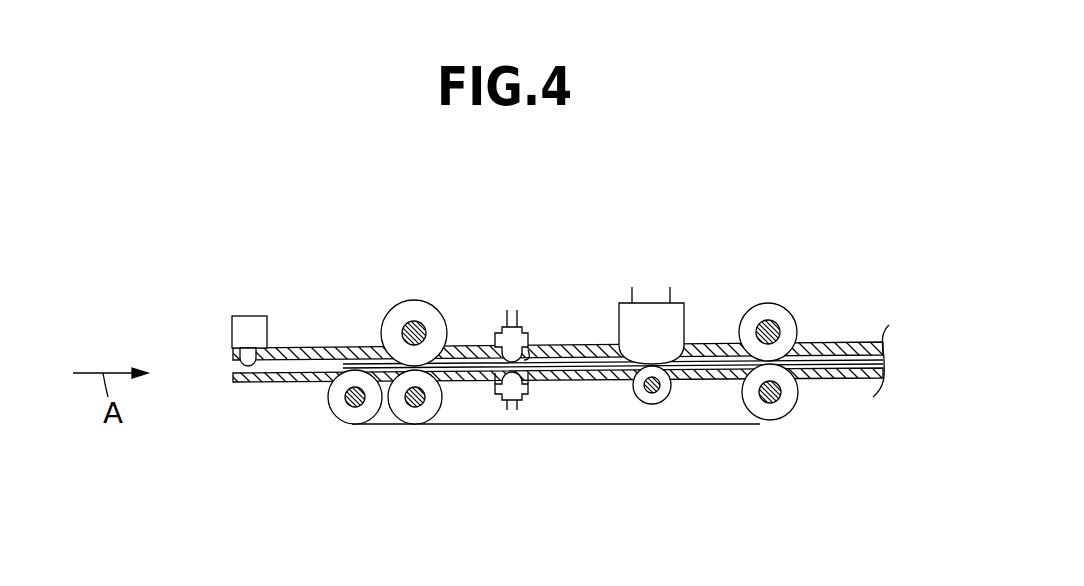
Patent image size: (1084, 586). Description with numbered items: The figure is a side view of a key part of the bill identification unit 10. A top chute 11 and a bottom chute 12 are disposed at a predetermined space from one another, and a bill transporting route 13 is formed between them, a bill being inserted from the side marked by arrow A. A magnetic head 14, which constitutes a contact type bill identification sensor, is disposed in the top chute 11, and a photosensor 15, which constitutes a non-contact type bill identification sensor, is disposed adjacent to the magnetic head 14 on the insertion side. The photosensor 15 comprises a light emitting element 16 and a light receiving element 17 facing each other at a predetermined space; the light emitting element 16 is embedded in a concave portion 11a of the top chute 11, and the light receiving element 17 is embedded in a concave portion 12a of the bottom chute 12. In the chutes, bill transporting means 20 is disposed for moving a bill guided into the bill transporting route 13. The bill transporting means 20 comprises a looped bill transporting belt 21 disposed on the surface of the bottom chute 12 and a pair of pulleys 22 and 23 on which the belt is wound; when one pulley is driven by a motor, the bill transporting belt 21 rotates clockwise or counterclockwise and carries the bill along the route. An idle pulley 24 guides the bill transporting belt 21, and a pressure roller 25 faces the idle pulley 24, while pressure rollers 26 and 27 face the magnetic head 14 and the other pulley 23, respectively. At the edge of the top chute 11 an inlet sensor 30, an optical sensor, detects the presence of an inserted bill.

The bill identification unit 10 is at (545, 356).
The top chute 11 is at (867, 343).
The concave portion of the top chute 11a is at (520, 358).
The bottom chute 12 is at (865, 382).
The concave portion of the bottom chute 12a is at (496, 396).
The bill transporting route 13 is at (222, 368).
The magnetic head 14 is at (653, 315).
The photosensor 15 is at (530, 364).
The light emitting element 16 is at (503, 326).
The light receiving element 17 is at (521, 402).
The bill transporting means 20 is at (595, 464).
The bill transporting belt 21 is at (637, 425).
The pulley 22 is at (352, 408).
The pulley 23 is at (782, 395).
The idle pulley 24 is at (413, 408).
The pressure roller 25 is at (413, 320).
The pressure roller 26 is at (662, 392).
The pressure roller 27 is at (770, 318).
The inlet sensor 30 is at (250, 316).